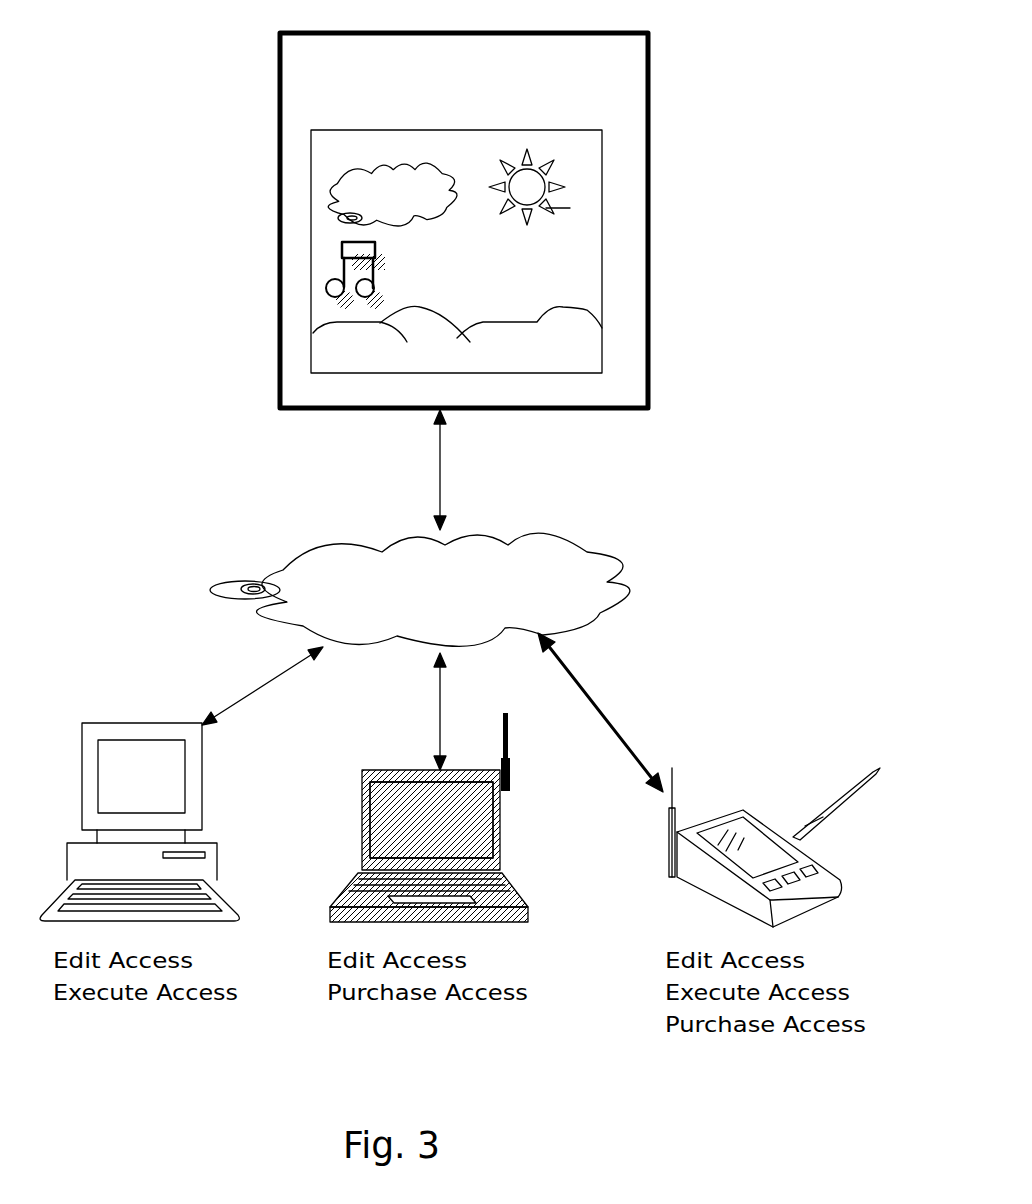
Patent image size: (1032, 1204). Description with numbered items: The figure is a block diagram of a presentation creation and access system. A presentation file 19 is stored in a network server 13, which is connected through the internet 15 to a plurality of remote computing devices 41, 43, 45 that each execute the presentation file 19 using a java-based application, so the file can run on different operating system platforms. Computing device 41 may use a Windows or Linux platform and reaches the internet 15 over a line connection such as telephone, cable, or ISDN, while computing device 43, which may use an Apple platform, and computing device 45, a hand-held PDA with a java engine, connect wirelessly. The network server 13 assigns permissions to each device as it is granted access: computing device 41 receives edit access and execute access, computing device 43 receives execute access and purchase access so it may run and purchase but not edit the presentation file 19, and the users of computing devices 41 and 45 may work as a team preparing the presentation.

The network server 13 is at (652, 178).
The presentation file 19 is at (427, 128).
The internet 15 is at (567, 537).
The computing device 41 is at (202, 775).
The computing device 43 is at (502, 807).
The computing device 45 is at (705, 817).